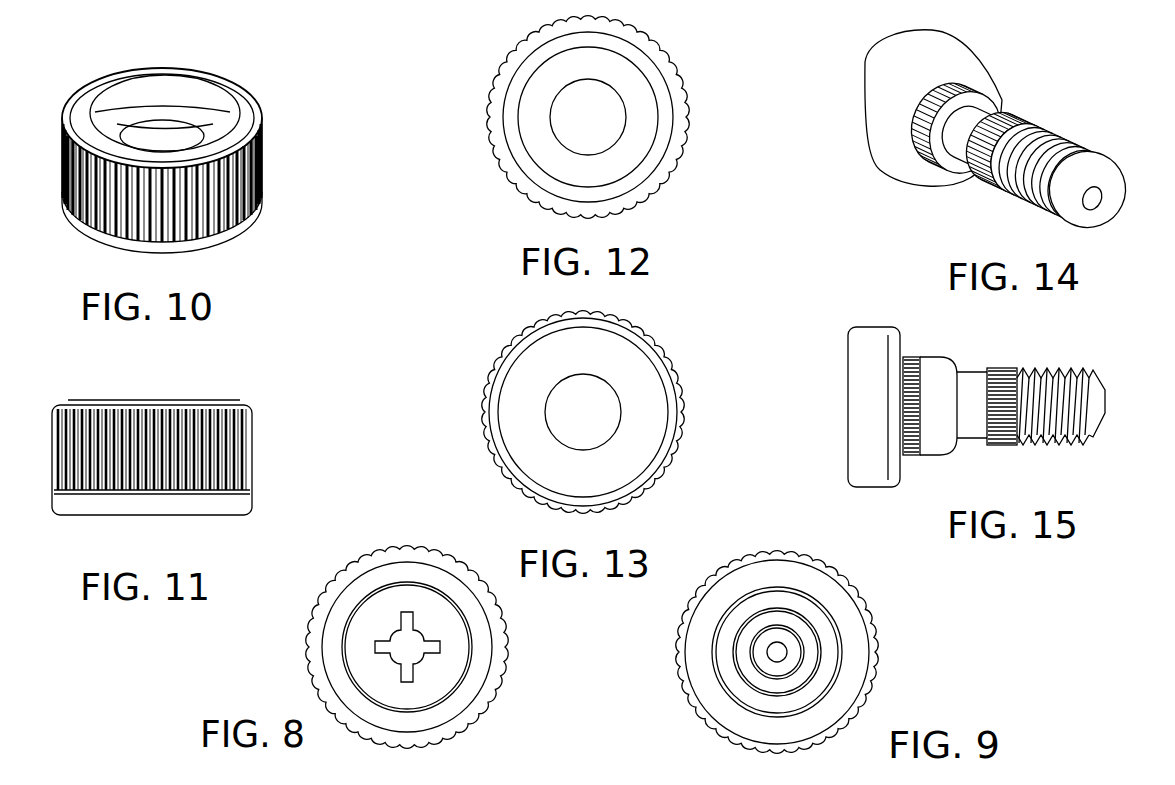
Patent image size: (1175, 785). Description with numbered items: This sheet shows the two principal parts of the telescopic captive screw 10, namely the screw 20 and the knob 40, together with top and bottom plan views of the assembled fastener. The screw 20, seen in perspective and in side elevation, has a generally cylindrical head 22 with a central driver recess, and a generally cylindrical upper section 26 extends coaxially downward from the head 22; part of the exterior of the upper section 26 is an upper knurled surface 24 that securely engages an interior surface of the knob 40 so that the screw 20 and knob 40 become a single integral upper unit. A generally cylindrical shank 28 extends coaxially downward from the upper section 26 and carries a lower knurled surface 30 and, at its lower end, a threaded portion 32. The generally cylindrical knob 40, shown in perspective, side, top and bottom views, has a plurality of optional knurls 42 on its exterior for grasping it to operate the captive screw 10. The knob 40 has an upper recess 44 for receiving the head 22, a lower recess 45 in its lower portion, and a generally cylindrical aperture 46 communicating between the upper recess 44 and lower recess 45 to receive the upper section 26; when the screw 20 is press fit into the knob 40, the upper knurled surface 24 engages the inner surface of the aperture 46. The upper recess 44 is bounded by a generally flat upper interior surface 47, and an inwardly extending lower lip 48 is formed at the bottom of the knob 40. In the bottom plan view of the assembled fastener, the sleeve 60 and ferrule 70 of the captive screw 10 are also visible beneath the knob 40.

In FIG. 14, the telescopic captive screw 10 is at (983, 127).
In FIG. 8, the telescopic captive screw 10 is at (390, 647).
In FIG. 9, the telescopic captive screw 10 is at (765, 654).
In FIG. 14, the screw 20 is at (983, 127).
In FIG. 15, the screw 20 is at (975, 408).
In FIG. 8, the screw 20 is at (437, 687).
In FIG. 9, the screw 20 is at (775, 650).
In FIG. 14, the head 22 is at (933, 108).
In FIG. 15, the head 22 is at (888, 455).
In FIG. 14, the upper knurled surface 24 is at (955, 128).
In FIG. 15, the upper knurled surface 24 is at (910, 357).
In FIG. 14, the upper section 26 is at (971, 135).
In FIG. 15, the upper section 26 is at (938, 388).
In FIG. 14, the shank 28 is at (1008, 152).
In FIG. 15, the shank 28 is at (967, 397).
In FIG. 14, the lower knurled surface 30 is at (1041, 168).
In FIG. 15, the lower knurled surface 30 is at (1003, 380).
In FIG. 14, the threaded portion 32 is at (1087, 189).
In FIG. 15, the threaded portion 32 is at (1062, 383).
In FIG. 10, the knob 40 is at (158, 155).
In FIG. 11, the knob 40 is at (184, 480).
In FIG. 12, the knob 40 is at (567, 117).
In FIG. 13, the knob 40 is at (577, 408).
In FIG. 8, the knob 40 is at (430, 647).
In FIG. 9, the knob 40 is at (700, 722).
In FIG. 10, the knurls 42 is at (68, 200).
In FIG. 11, the knurls 42 is at (218, 445).
In FIG. 13, the knurls 42 is at (507, 470).
In FIG. 10, the upper recess 44 is at (163, 90).
In FIG. 12, the upper recess 44 is at (547, 153).
In FIG. 8, the upper recess 44 is at (480, 647).
In FIG. 13, the lower recess 45 is at (618, 360).
In FIG. 10, the aperture 46 is at (157, 147).
In FIG. 12, the aperture 46 is at (602, 107).
In FIG. 13, the aperture 46 is at (605, 418).
In FIG. 13, the upper interior surface 47 is at (648, 392).
In FIG. 10, the lower lip 48 is at (213, 248).
In FIG. 11, the lower lip 48 is at (213, 507).
In FIG. 9, the sleeve 60 is at (850, 675).
In FIG. 9, the ferrule 70 is at (722, 668).